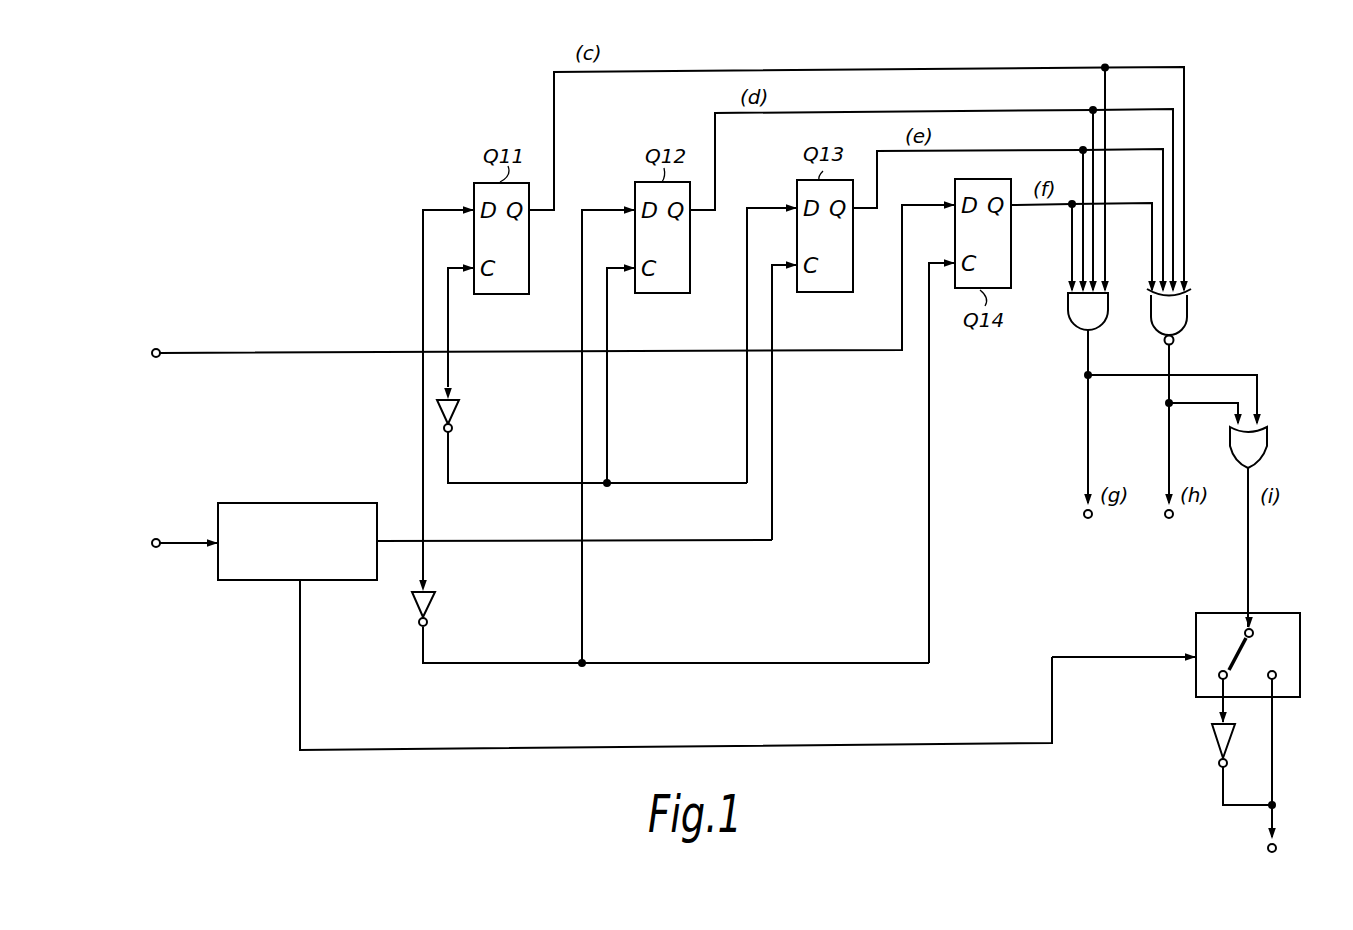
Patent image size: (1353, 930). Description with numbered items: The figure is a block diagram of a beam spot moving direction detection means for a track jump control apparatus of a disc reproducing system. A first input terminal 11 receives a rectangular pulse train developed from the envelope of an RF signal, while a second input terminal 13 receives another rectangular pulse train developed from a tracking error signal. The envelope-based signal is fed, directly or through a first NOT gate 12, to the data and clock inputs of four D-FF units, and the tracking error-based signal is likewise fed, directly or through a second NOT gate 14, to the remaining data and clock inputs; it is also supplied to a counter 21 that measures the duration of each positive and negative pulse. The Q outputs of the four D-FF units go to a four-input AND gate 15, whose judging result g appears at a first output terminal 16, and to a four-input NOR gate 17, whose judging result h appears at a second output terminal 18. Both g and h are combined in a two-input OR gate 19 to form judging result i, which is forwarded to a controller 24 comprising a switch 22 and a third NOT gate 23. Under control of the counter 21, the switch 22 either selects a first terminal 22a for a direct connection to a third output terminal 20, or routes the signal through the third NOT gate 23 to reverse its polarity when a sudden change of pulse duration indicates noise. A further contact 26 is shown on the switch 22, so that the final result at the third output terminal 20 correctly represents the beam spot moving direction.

The first input terminal 11 is at (157, 349).
The first NOT gate 12 is at (459, 405).
The second input terminal 13 is at (157, 539).
The second NOT gate 14 is at (433, 598).
The four-input AND gate 15 is at (1068, 316).
The first output terminal 16 is at (1088, 519).
The four-input NOR gate 17 is at (1188, 320).
The second output terminal 18 is at (1169, 519).
The two-input OR gate 19 is at (1267, 441).
The third output terminal 20 is at (1268, 848).
The counter 21 is at (267, 503).
The switch 22 is at (1283, 613).
The first terminal 22a is at (1277, 675).
The third NOT gate 23 is at (1212, 745).
The controller 24 is at (1294, 727).
The switch contact 26 is at (1219, 675).